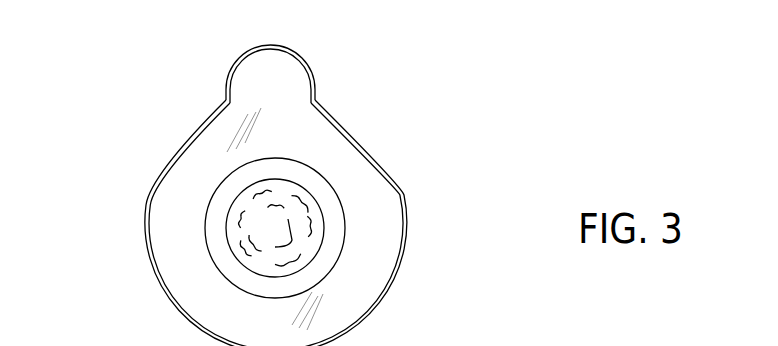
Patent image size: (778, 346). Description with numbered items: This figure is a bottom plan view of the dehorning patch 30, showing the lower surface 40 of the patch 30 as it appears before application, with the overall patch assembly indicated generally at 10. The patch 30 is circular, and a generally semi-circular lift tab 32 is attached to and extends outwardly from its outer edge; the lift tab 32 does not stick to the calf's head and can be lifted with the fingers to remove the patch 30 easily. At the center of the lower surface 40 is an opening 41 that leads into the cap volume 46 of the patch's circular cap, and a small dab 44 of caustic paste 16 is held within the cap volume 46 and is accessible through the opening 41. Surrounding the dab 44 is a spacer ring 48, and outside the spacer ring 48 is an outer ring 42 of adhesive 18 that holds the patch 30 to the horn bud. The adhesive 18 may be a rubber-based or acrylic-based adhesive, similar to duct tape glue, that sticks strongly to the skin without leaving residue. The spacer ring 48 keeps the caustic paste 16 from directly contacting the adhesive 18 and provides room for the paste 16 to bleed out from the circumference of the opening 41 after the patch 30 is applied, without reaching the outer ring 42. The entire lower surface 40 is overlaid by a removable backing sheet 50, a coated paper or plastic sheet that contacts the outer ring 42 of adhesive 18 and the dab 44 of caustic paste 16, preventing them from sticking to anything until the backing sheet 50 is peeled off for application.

The assembly 10 is at (432, 100).
The patch 30 is at (395, 178).
The lift tab 32 is at (283, 83).
The backing sheet 50 is at (400, 258).
The spacer ring 48 is at (212, 193).
The lower surface 40 is at (374, 262).
The opening 41 is at (322, 224).
The caustic paste 16 is at (175, 228).
The dab 44 is at (238, 232).
The adhesive 18 is at (182, 219).
The outer ring 42 is at (197, 287).
The cap volume 46 is at (303, 244).